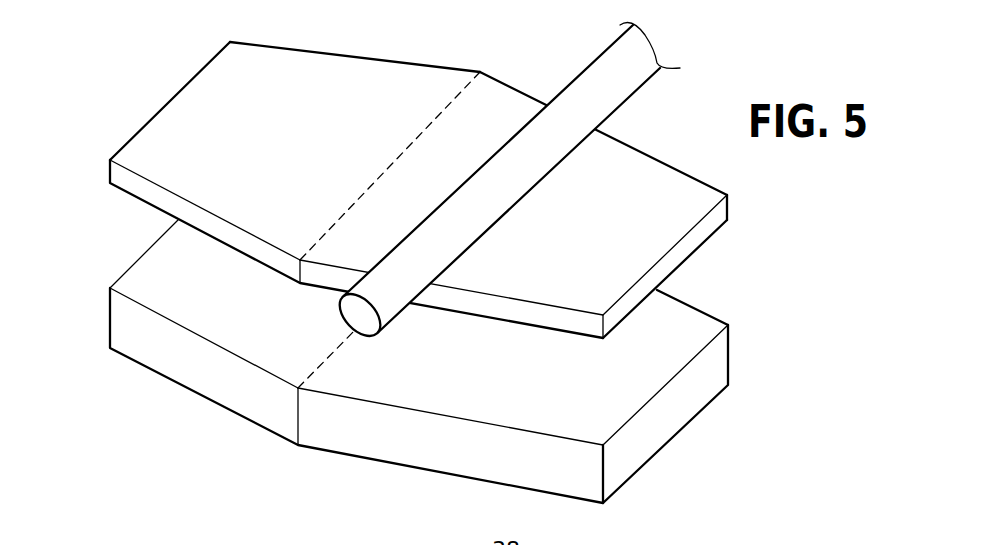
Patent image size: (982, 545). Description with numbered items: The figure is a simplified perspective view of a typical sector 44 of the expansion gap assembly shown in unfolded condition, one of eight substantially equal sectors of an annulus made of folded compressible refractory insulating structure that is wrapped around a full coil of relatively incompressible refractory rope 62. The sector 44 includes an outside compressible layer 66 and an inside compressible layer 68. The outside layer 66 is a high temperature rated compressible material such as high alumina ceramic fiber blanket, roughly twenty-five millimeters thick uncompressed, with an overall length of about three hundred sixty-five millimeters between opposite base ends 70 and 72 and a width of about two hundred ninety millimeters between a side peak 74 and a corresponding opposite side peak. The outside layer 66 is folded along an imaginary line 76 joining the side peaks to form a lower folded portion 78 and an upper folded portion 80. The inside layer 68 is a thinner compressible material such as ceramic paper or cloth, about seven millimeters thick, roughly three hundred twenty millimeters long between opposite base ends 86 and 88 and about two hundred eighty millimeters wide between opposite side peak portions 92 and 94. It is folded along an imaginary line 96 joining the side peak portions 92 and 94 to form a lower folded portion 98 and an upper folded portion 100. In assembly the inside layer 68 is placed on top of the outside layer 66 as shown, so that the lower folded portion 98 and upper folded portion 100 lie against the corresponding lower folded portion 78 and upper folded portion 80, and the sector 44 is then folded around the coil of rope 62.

The sector 44 is at (138, 415).
The refractory rope 62 is at (623, 107).
The outside compressible layer 66 is at (111, 313).
The inside compressible layer 68 is at (169, 101).
The base end 70 is at (655, 437).
The base end 72 is at (158, 232).
The side peak 74 is at (296, 415).
The imaginary line 76 is at (337, 342).
The lower folded portion 78 is at (680, 338).
The upper folded portion 80 is at (150, 275).
The base end 86 is at (687, 245).
The base end 88 is at (212, 57).
The side peak portion 92 is at (280, 272).
The side peak portion 94 is at (480, 72).
The imaginary line 96 is at (420, 131).
The lower folded portion 98 is at (682, 198).
The upper folded portion 100 is at (282, 65).